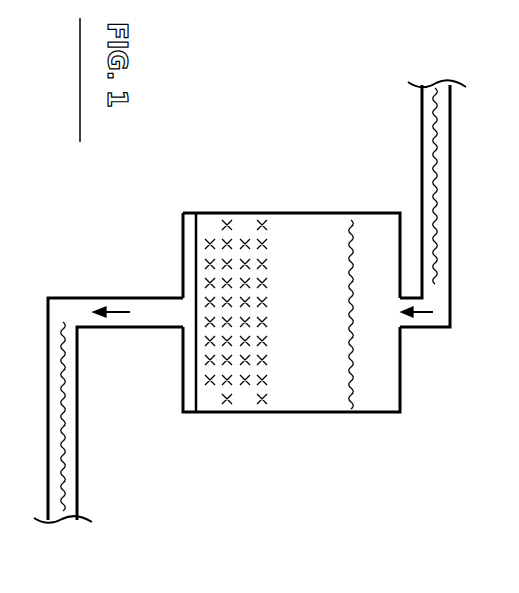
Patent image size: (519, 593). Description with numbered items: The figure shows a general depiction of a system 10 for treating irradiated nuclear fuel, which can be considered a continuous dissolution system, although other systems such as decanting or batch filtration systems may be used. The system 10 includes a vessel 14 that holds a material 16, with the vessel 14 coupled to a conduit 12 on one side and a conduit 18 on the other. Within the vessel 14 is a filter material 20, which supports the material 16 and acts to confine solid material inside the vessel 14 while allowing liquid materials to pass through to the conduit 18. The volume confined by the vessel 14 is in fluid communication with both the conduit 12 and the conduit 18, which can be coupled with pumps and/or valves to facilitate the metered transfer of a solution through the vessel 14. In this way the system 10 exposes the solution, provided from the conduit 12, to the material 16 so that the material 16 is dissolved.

The system 10 is at (440, 450).
The conduit 12 is at (443, 185).
The vessel 14 is at (320, 412).
The material 16 is at (228, 213).
The conduit 18 is at (70, 400).
The filter material 20 is at (190, 412).